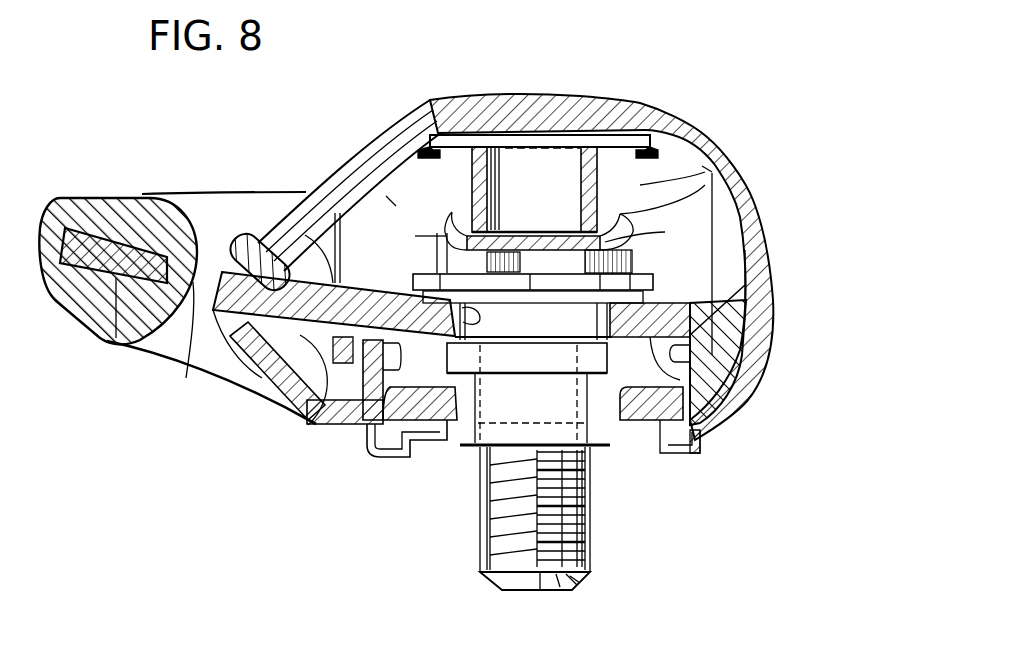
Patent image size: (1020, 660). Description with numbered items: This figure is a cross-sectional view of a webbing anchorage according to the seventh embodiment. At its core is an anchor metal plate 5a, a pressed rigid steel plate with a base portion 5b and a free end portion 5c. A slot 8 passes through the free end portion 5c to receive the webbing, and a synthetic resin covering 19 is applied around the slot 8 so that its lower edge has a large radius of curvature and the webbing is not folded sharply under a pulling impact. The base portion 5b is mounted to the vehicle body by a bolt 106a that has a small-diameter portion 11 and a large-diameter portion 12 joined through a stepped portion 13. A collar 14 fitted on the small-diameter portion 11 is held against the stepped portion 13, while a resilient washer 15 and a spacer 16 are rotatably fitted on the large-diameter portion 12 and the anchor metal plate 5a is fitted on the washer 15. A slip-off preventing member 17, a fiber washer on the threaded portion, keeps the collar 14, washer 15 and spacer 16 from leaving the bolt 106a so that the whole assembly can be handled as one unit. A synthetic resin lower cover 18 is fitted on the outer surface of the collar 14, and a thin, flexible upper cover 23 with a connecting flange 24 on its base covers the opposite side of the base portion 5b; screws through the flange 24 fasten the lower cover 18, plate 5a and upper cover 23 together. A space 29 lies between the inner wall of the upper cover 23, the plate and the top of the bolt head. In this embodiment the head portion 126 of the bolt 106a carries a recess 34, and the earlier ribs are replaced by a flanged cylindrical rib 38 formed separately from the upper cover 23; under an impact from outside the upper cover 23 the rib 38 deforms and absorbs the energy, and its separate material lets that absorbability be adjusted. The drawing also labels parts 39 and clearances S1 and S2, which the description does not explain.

The covering 19 is at (80, 308).
The free end portion 5c is at (125, 335).
The slot 8 is at (191, 300).
The upper cover 23 is at (575, 110).
The connecting flange 24 is at (766, 318).
The lower cover 18 is at (757, 388).
The space 29 is at (677, 200).
The head portion 126 is at (640, 233).
The flanged cylindrical rib 38 is at (437, 136).
The clip 39 is at (415, 165).
The recess 34 is at (518, 132).
The washer 15 is at (527, 322).
The large-diameter portion 12 is at (414, 296).
The anchor metal plate 5a is at (318, 380).
The base portion 5b is at (733, 413).
The stepped portion 13 is at (427, 432).
The spacer 16 is at (412, 432).
The slip-off preventing member 17 is at (597, 450).
The collar 14 is at (502, 408).
The small-diameter portion 11 is at (480, 542).
The bolt 106a is at (548, 565).
The gap S1 is at (388, 197).
The gap S2 is at (706, 168).